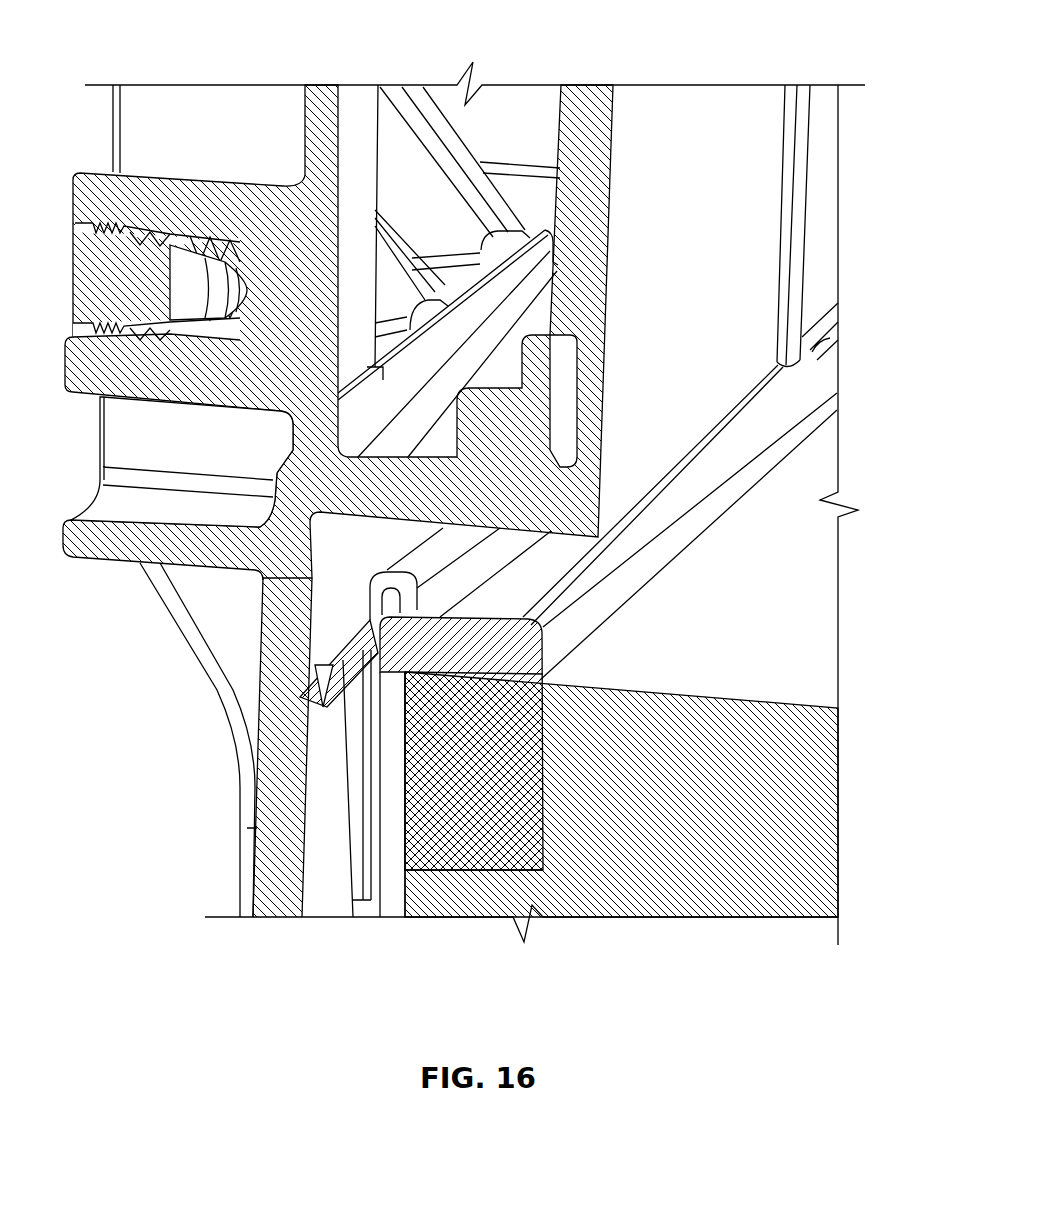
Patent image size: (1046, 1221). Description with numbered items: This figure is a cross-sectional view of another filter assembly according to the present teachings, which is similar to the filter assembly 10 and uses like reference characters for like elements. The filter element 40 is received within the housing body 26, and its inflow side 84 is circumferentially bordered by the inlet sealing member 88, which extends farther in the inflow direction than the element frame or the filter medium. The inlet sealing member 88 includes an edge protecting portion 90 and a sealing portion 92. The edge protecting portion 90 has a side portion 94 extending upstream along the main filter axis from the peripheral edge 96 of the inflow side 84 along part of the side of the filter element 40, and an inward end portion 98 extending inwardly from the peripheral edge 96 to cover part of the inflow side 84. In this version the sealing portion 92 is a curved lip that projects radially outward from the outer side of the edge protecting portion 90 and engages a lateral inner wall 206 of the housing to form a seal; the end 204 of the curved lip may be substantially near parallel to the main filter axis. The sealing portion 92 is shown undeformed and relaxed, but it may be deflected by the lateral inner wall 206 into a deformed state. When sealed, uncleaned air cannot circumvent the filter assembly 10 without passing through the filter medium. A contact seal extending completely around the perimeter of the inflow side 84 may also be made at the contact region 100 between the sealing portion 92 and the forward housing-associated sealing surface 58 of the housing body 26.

The filter assembly 10 is at (812, 846).
The housing body 26 is at (242, 205).
The filter element 40 is at (728, 896).
The forward housing-associated sealing surface 58 is at (553, 535).
The inflow side 84 is at (820, 583).
The inlet sealing member 88 is at (512, 655).
The edge protecting portion 90 is at (345, 668).
The sealing portion 92 is at (378, 662).
The side portion 94 is at (370, 598).
The peripheral edge 96 is at (468, 678).
The inward end portion 98 is at (818, 348).
The contact region 100 is at (315, 698).
The end of the curved lip 204 is at (312, 705).
The lateral inner wall 206 is at (293, 838).